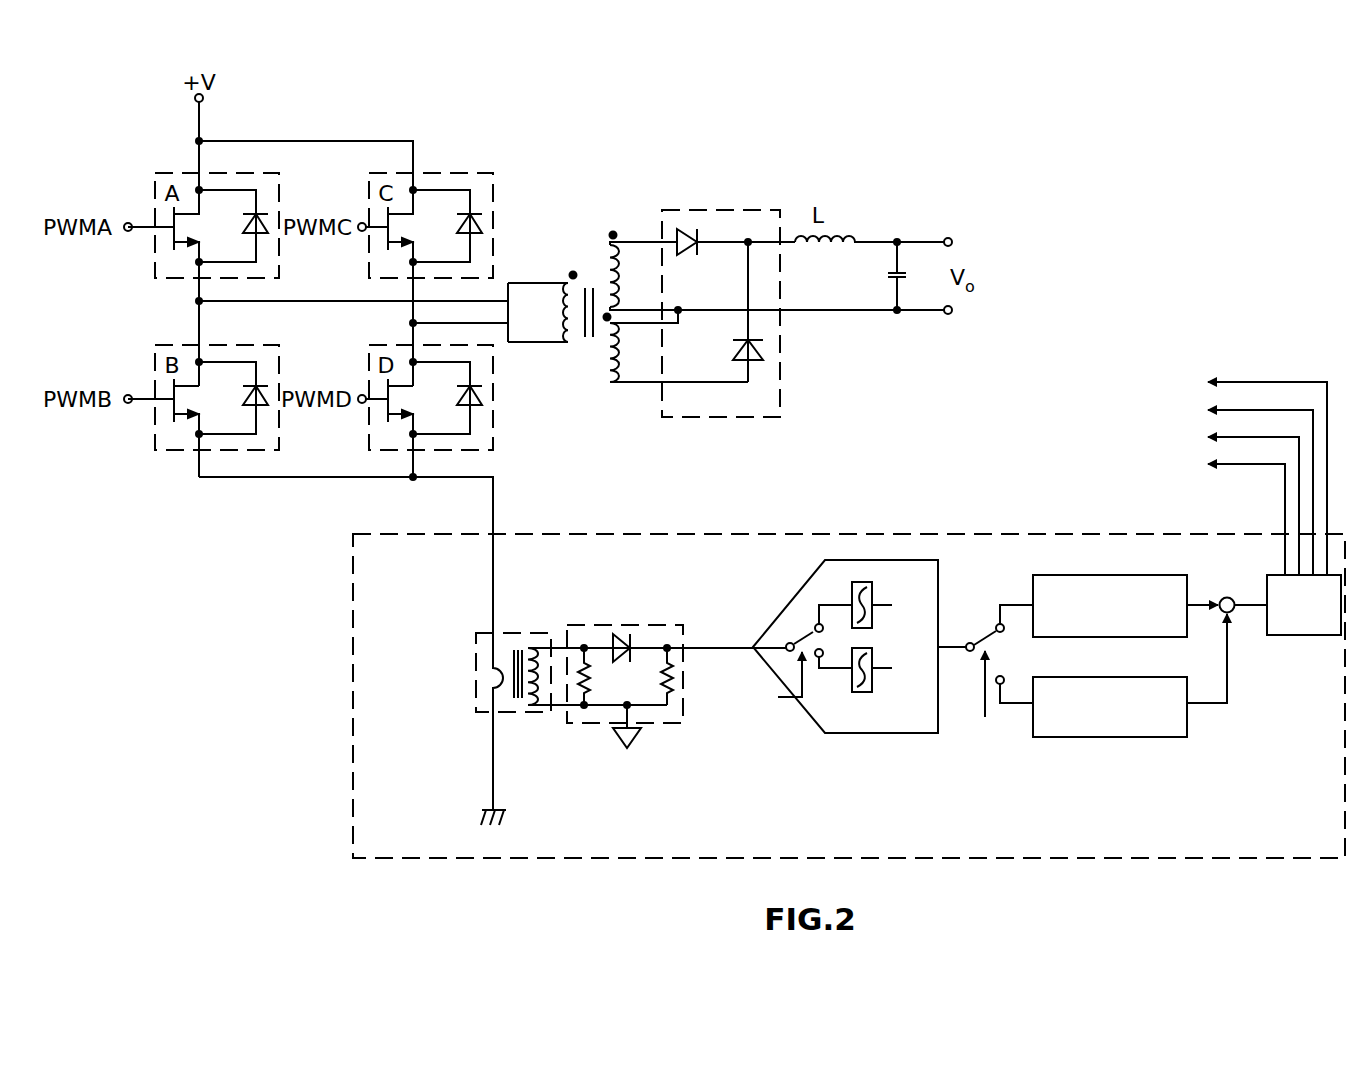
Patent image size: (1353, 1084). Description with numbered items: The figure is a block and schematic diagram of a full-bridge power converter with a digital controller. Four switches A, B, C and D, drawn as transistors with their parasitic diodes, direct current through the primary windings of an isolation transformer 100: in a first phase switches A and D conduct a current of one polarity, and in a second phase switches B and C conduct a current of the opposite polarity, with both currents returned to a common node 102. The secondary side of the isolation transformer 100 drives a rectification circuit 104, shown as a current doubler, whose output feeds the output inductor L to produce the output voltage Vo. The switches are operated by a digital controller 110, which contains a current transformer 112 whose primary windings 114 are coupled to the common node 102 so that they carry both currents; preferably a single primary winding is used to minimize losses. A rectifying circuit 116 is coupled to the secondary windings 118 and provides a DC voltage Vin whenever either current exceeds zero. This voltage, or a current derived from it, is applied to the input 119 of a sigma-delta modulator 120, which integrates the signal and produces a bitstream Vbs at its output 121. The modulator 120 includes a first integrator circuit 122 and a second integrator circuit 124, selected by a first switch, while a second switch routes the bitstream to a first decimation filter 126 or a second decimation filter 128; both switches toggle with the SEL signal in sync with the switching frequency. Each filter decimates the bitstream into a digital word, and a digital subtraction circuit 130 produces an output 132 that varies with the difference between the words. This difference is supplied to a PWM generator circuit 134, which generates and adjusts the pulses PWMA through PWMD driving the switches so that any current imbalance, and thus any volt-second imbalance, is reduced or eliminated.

The isolation transformer 100 is at (593, 238).
The common node 102 is at (413, 478).
The rectification circuit 104 is at (725, 210).
The digital controller 110 is at (770, 534).
The current transformer 112 is at (517, 633).
The primary windings 114 is at (490, 652).
The rectifying circuit 116 is at (615, 625).
The secondary windings 118 is at (543, 708).
The input 119 is at (705, 652).
The sigma-delta modulator 120 is at (839, 666).
The output 121 is at (950, 650).
The first integrator circuit 122 is at (862, 581).
The second integrator circuit 124 is at (887, 681).
The first decimation filter 126 is at (1112, 575).
The second decimation filter 128 is at (1108, 737).
The digital subtraction circuit 130 is at (1233, 597).
The output 132 is at (1250, 607).
The PWM generator circuit 134 is at (1280, 636).